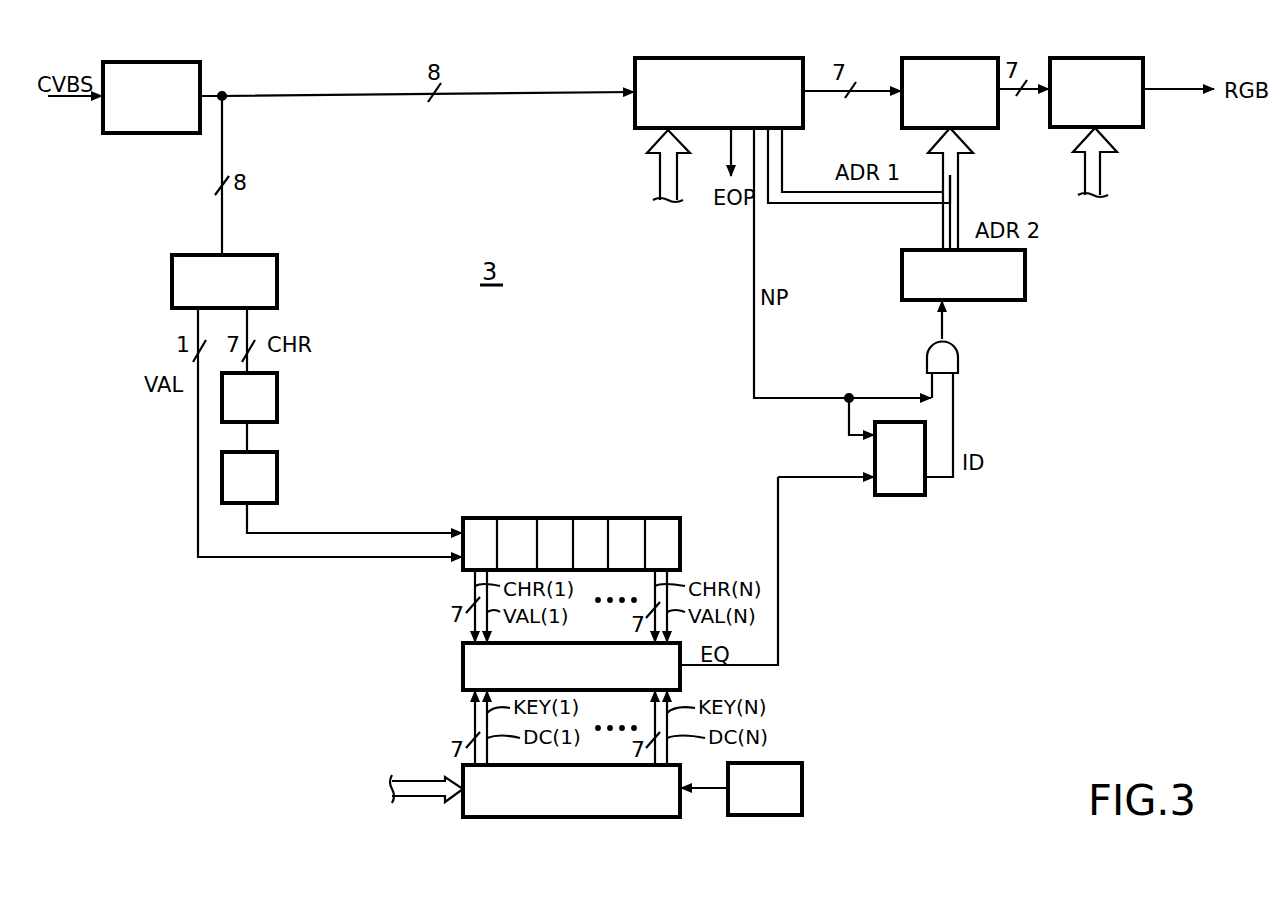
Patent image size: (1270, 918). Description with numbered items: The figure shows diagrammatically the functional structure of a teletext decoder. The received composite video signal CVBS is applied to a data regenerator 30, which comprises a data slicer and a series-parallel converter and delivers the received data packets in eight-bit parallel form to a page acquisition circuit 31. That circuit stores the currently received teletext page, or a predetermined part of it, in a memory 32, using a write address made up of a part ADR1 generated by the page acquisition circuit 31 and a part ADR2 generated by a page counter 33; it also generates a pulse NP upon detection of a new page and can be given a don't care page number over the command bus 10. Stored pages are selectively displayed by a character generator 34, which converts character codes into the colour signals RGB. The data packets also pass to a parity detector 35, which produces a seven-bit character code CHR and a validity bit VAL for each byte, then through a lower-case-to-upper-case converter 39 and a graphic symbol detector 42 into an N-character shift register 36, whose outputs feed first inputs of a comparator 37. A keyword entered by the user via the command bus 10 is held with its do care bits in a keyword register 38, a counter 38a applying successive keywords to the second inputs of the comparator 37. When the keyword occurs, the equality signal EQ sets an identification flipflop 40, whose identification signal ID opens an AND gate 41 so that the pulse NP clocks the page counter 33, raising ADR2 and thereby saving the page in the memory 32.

The command bus 10 is at (660, 182).
The data regenerator 30 is at (148, 72).
The page acquisition circuit 31 is at (735, 68).
The memory 32 is at (948, 67).
The page counter 33 is at (1022, 282).
The character generator 34 is at (1097, 66).
The parity detector 35 is at (272, 279).
The shift register 36 is at (672, 540).
The comparator 37 is at (463, 665).
The keyword register 38 is at (590, 807).
The counter 38a is at (768, 815).
The lower-case-to-upper-case converter 39 is at (272, 396).
The identification flipflop 40 is at (910, 495).
The AND gate 41 is at (955, 352).
The graphic symbol detector 42 is at (270, 478).